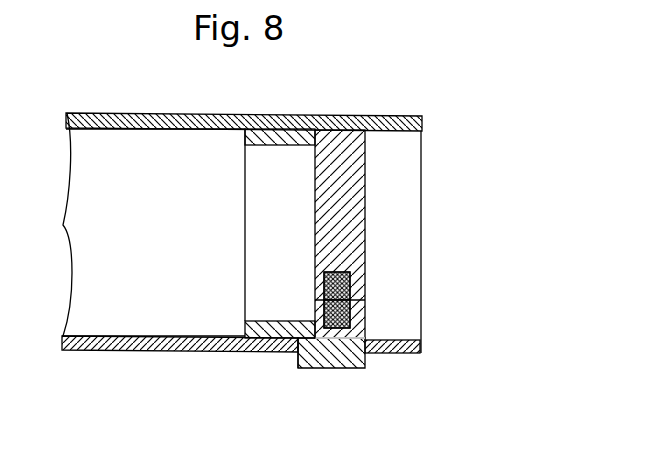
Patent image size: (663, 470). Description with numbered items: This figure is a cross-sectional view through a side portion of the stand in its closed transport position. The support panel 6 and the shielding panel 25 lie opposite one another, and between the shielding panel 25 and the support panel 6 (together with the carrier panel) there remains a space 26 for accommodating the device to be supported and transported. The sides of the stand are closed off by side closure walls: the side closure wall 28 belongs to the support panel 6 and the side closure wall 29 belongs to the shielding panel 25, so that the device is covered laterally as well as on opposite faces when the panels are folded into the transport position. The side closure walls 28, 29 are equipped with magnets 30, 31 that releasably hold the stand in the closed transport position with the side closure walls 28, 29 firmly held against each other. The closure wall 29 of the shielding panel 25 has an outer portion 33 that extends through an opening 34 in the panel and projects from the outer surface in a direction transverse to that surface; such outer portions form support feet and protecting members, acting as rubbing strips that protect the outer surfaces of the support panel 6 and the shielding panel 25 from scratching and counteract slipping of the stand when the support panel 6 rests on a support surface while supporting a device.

The support panel 6 is at (405, 175).
The shielding panel 25 is at (398, 318).
The space 26 is at (170, 238).
The side closure wall 28 is at (356, 195).
The side closure wall 29 is at (362, 317).
The magnet 30 is at (343, 272).
The magnet 31 is at (332, 320).
The outer portion 33 is at (343, 365).
The opening 34 is at (308, 355).